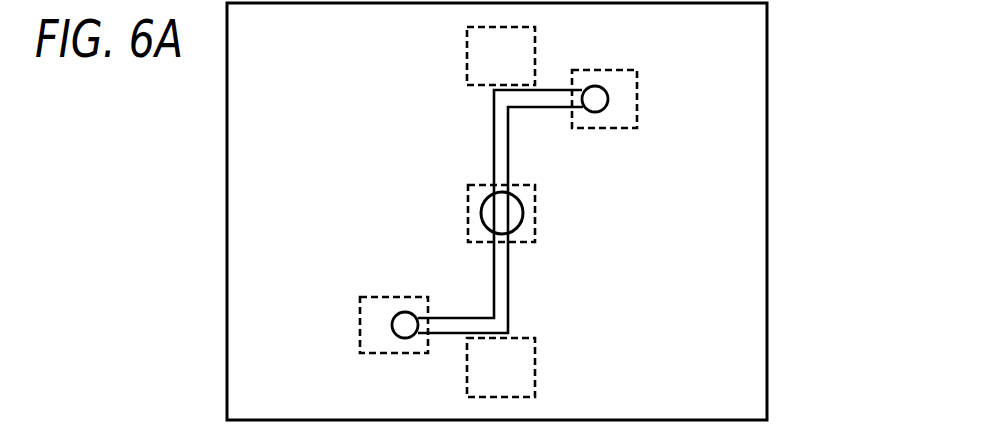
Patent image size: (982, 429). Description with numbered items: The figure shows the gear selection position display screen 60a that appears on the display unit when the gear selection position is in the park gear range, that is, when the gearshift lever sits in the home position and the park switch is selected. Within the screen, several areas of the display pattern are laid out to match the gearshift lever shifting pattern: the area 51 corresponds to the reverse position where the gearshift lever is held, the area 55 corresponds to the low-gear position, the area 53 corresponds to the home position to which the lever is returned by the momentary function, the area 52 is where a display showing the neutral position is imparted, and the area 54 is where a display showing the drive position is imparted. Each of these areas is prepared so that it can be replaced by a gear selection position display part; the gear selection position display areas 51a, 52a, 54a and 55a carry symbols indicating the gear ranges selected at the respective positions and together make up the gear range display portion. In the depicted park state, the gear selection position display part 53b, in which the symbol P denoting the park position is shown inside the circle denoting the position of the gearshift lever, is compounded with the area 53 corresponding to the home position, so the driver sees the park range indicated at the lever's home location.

The gear selection position display screen 60a is at (770, 52).
The area to which a display showing the neutral position is imparted 52 is at (537, 62).
The gear selection position display area 52a is at (524, 38).
The area corresponding to the reverse position 51 is at (638, 112).
The gear selection position display area 51a is at (625, 80).
The area corresponding to the home position 53 is at (536, 232).
The gear selection position display part 53b is at (527, 200).
The area corresponding to the low-gear position 55 is at (358, 320).
The gear selection position display area 55a is at (385, 300).
The area to which a display showing the drive position is imparted 54 is at (537, 382).
The gear selection position display area 54a is at (525, 355).